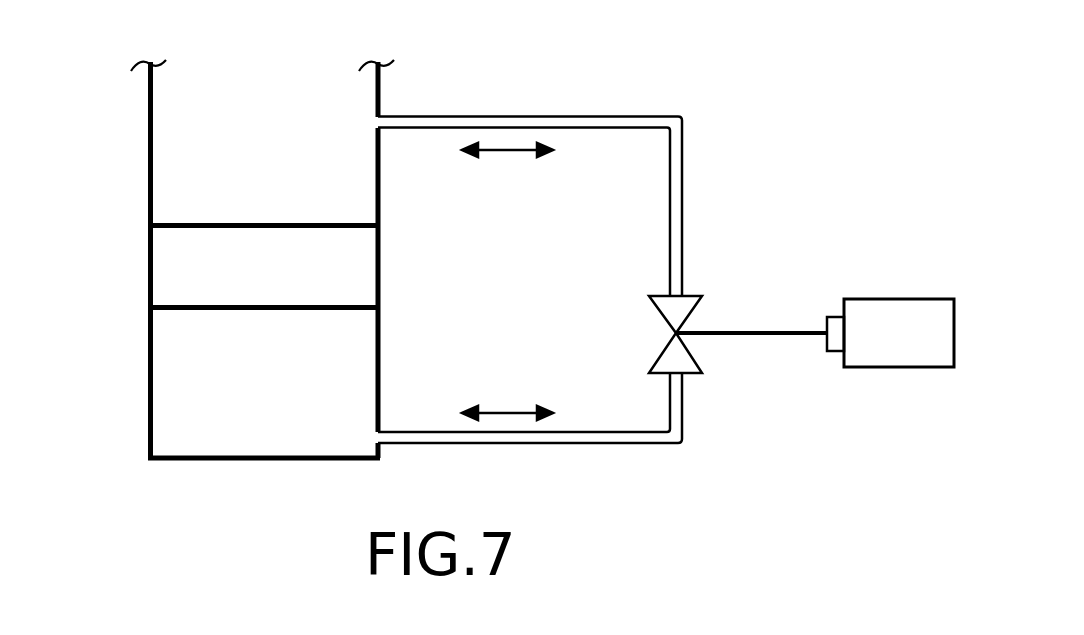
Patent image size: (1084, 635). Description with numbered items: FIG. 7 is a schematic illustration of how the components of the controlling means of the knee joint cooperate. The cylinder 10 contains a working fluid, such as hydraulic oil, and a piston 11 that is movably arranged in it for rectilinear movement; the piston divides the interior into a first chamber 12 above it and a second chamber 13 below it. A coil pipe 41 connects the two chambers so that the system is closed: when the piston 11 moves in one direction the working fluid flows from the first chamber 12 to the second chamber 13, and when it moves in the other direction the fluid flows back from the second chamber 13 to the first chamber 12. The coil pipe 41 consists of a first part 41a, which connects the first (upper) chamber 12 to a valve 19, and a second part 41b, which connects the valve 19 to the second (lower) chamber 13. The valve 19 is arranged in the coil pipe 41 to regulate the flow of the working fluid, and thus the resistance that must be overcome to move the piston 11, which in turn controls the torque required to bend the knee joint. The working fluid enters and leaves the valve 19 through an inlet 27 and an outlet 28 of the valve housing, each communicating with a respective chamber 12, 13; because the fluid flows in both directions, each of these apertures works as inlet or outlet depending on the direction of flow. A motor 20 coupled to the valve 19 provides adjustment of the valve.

The cylinder 10 is at (148, 199).
The piston 11 is at (332, 263).
The first chamber 12 is at (203, 158).
The second chamber 13 is at (180, 388).
The valve 19 is at (741, 339).
The motor 20 is at (898, 316).
The inlet 27 is at (680, 297).
The outlet 28 is at (681, 378).
The coil pipe 41 is at (590, 289).
The first part of the coil pipe 41a is at (527, 122).
The second part of the coil pipe 41b is at (624, 445).